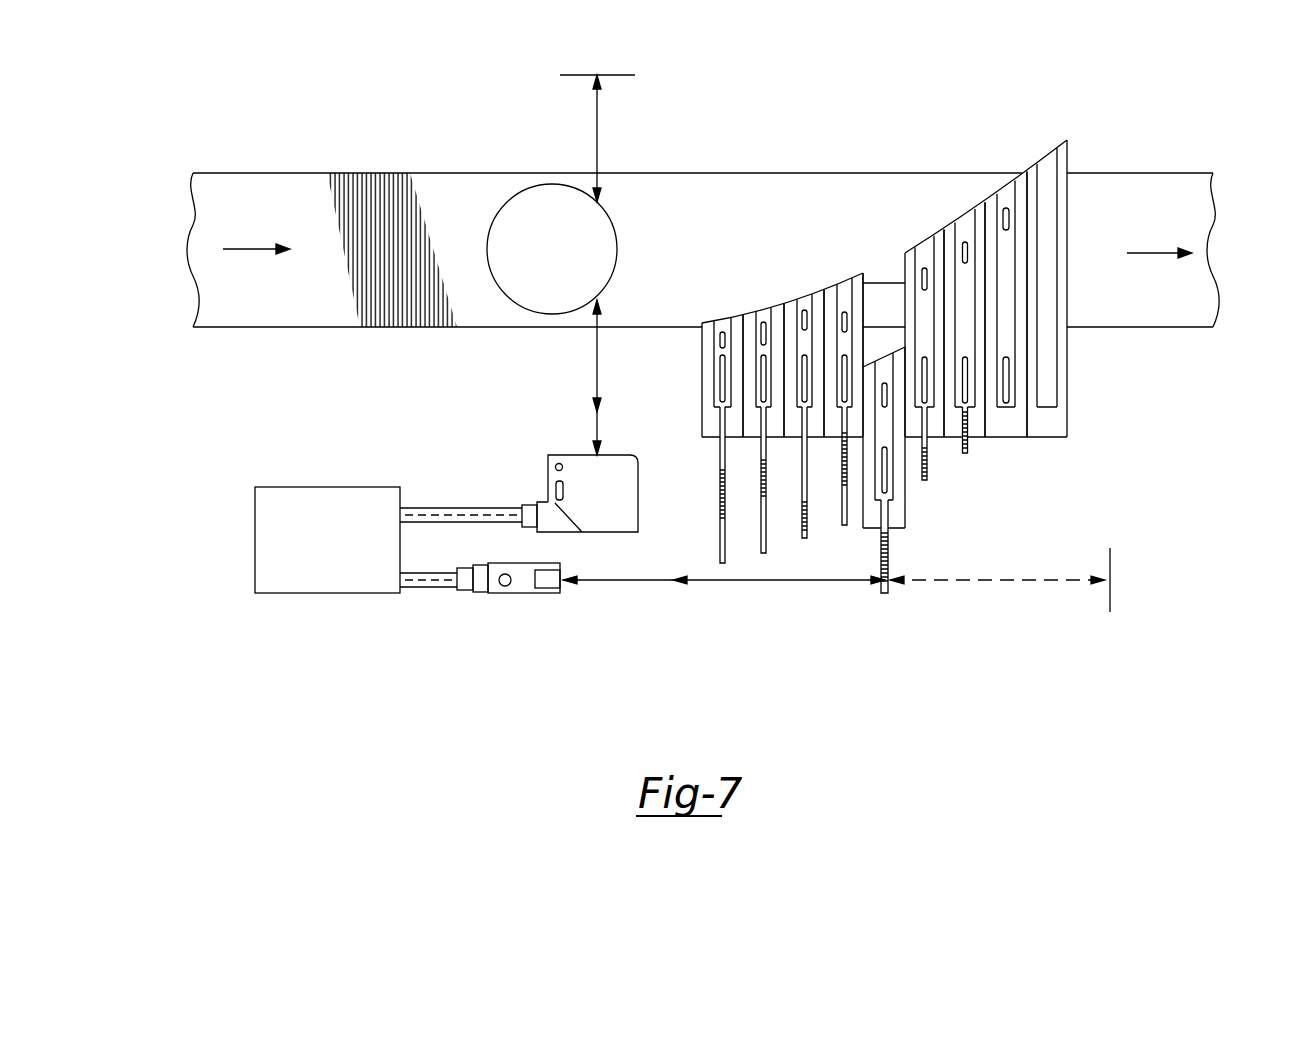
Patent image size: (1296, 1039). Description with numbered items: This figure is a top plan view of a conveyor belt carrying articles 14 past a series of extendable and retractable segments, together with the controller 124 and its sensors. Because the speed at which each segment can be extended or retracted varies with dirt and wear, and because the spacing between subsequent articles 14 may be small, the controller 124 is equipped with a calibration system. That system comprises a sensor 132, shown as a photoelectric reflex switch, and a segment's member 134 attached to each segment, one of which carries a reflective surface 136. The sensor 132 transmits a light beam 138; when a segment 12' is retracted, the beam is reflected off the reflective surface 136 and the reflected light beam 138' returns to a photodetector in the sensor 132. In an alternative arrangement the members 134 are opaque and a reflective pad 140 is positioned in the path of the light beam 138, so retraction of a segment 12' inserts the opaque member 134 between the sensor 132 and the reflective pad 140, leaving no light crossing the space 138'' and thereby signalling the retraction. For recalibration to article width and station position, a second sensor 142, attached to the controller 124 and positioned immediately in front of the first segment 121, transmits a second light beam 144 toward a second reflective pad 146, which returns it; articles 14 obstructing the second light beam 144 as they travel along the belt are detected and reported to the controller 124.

The article 14 is at (520, 195).
The first segment 121 is at (700, 345).
The segment 12' is at (921, 323).
The controller 124 is at (345, 487).
The second sensor 142 is at (560, 455).
The sensor 132 is at (522, 596).
The segment's member 134 is at (893, 583).
The reflective surface 136 is at (880, 570).
The second light beam 144 is at (597, 352).
The second reflective pad 146 is at (600, 76).
The light beam 138 is at (779, 647).
The reflected light beam 138' is at (618, 647).
The space 138'' is at (997, 658).
The reflective pad 140 is at (1112, 556).